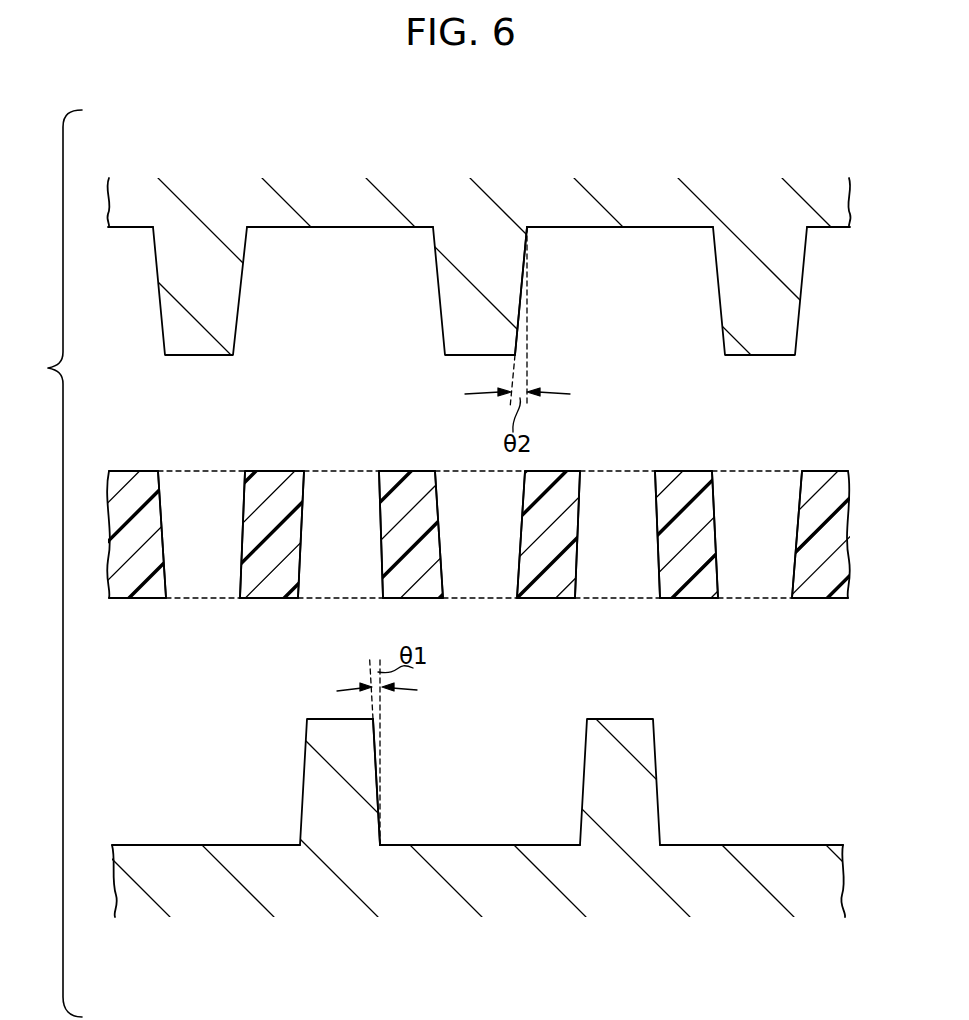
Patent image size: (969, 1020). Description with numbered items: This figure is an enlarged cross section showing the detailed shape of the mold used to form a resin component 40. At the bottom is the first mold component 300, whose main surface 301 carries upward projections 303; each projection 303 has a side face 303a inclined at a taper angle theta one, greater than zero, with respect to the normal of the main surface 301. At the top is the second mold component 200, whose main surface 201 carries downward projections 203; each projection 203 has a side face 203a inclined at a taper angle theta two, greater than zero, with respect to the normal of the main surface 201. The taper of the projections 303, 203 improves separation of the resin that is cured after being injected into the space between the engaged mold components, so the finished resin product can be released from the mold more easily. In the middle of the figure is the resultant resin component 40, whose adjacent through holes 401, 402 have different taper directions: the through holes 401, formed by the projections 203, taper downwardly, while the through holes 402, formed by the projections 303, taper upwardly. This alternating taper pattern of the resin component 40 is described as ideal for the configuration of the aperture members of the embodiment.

The second mold component 200 is at (479, 236).
The main surface of second mold component 201 is at (608, 230).
The projection of second mold component 203 is at (480, 293).
The side face of projection 203 203a is at (520, 310).
The resin component 40 is at (484, 494).
The through hole 401 is at (244, 508).
The through hole 402 is at (380, 510).
The first mold component 300 is at (484, 850).
The main surface of first mold component 301 is at (477, 845).
The projection of first mold component 303 is at (486, 782).
The side face of projection 303 303a is at (378, 763).